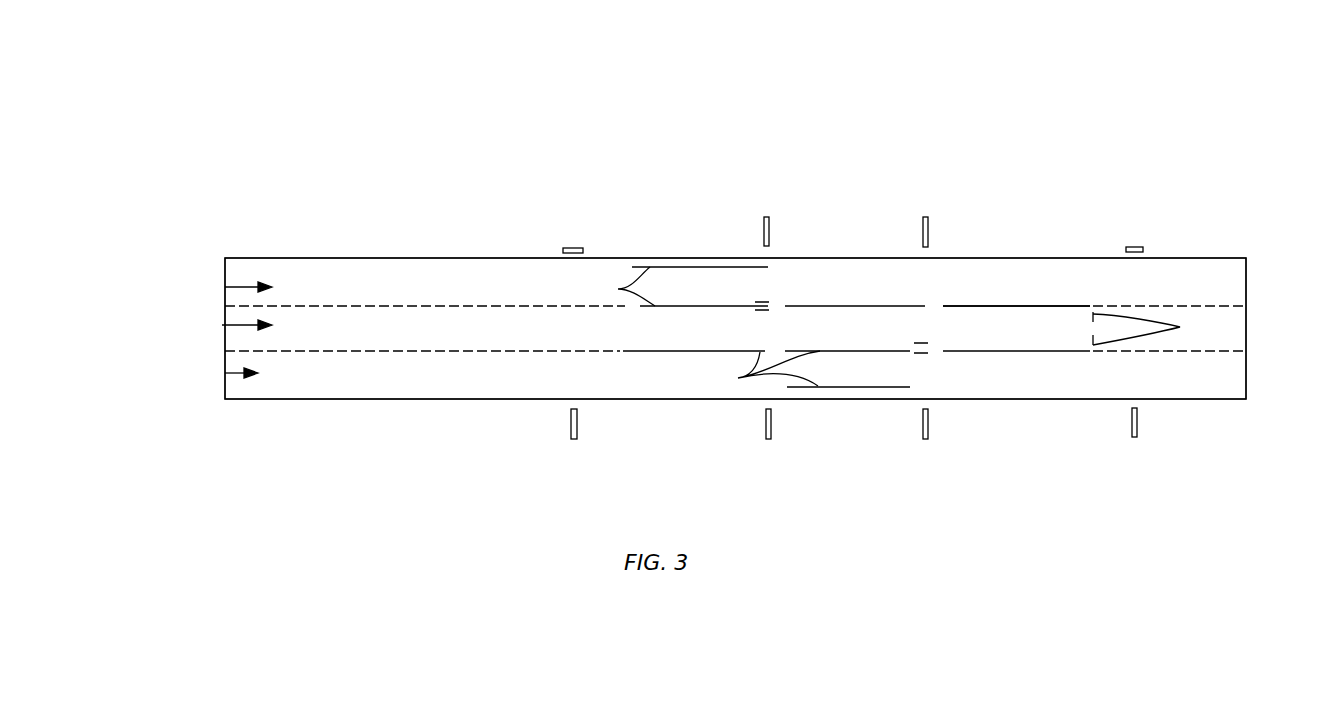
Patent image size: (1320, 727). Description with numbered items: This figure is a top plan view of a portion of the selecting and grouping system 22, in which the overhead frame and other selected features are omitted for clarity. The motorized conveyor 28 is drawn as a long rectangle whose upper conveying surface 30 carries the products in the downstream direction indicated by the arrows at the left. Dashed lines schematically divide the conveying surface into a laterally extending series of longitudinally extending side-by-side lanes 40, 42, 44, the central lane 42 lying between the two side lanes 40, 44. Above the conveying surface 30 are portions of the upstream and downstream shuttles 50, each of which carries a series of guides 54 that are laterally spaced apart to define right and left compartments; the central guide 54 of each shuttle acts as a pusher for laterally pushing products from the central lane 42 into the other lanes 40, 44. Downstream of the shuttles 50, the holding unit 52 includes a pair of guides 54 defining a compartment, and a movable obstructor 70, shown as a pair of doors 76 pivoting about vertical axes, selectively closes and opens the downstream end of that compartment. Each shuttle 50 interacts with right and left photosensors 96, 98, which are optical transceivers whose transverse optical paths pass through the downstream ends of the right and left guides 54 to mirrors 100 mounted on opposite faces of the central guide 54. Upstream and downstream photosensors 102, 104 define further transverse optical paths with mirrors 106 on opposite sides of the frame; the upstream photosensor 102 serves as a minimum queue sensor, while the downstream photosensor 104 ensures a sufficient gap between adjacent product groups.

The selecting and grouping system 22 is at (367, 129).
The motorized conveyor 28 is at (298, 400).
The conveying surface 30 is at (1216, 292).
The lane 40 is at (246, 373).
The central lane 42 is at (260, 325).
The lane 44 is at (260, 287).
The shuttle 50 is at (853, 307).
The holding unit 52 is at (1008, 307).
The guide 54 is at (1065, 306).
The movable obstructor 70 is at (1093, 352).
The doors 76 is at (1180, 327).
The right photosensor 96 is at (768, 440).
The left photosensor 98 is at (766, 216).
The mirrors 100 is at (798, 224).
The upstream photosensor 102 is at (573, 440).
The downstream photosensor 104 is at (1137, 425).
The mirrors 106 is at (580, 248).